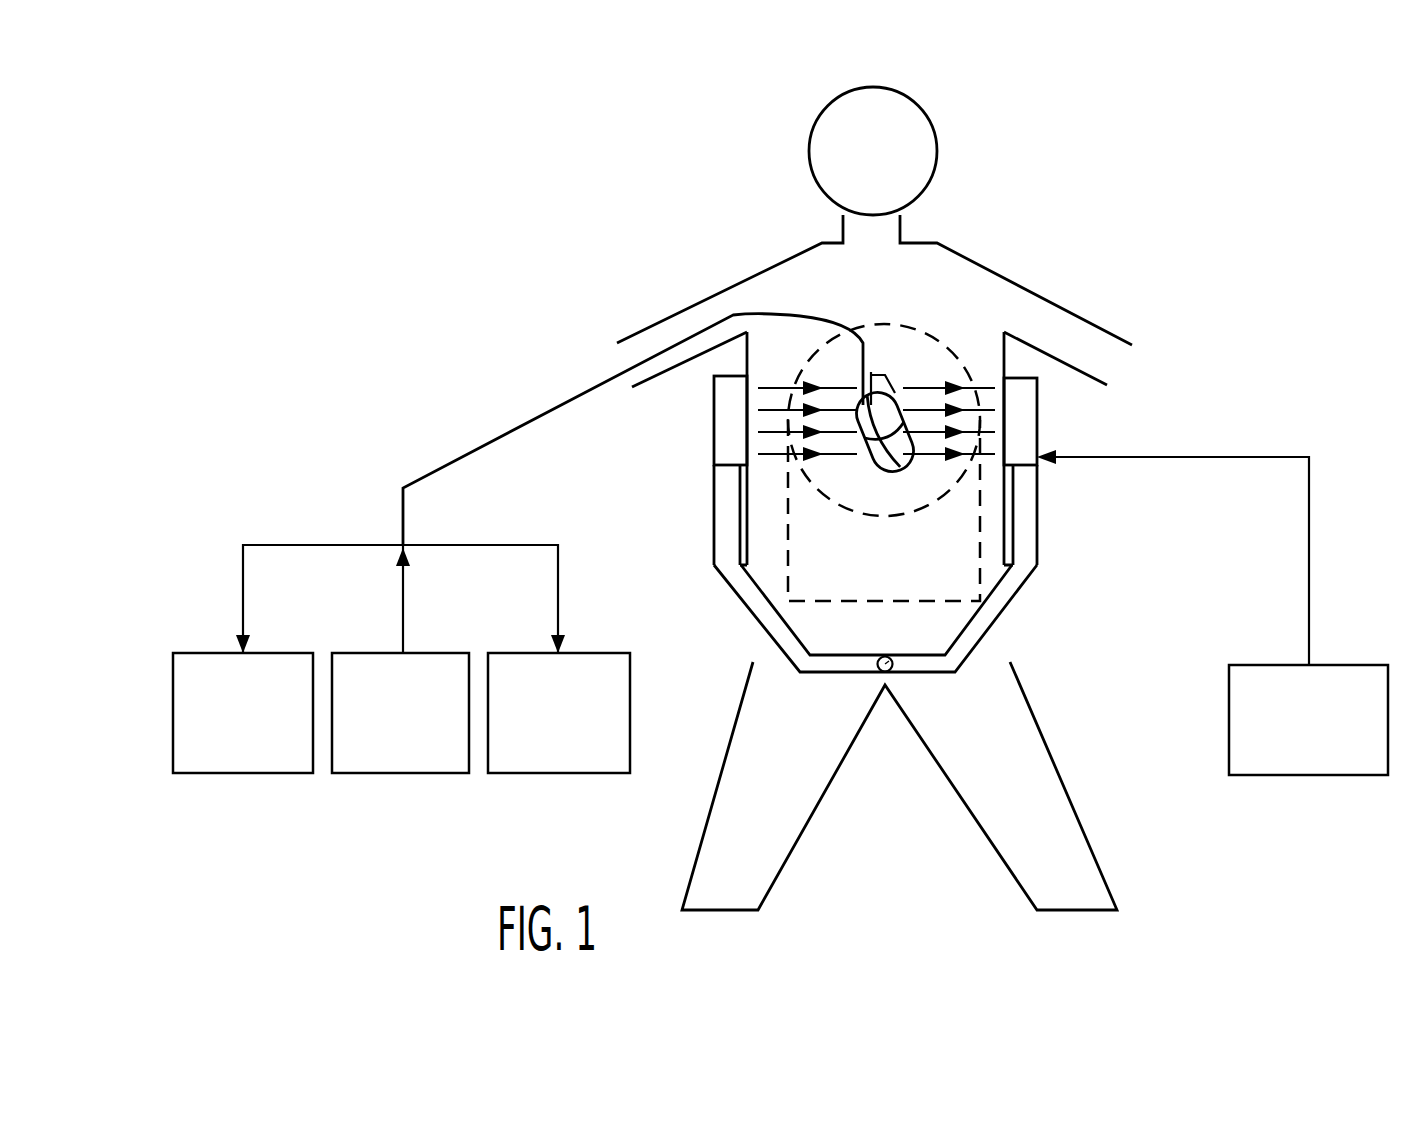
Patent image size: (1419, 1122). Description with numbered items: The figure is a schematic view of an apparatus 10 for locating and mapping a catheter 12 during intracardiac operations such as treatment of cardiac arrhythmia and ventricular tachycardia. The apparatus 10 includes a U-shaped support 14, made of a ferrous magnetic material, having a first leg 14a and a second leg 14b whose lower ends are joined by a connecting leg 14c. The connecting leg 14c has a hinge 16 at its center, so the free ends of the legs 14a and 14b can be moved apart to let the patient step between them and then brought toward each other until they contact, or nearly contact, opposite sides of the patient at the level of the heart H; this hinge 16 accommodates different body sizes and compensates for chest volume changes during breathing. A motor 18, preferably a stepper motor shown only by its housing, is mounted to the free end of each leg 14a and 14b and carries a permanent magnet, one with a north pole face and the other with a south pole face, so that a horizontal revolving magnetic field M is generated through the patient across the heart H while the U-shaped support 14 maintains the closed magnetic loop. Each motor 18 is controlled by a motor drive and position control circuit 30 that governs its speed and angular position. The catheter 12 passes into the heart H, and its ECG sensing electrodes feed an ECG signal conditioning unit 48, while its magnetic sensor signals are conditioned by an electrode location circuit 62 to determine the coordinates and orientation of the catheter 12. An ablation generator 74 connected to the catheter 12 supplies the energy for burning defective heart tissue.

The apparatus 10 is at (1169, 302).
The catheter 12 is at (512, 428).
The U-shaped support 14 is at (876, 532).
The first leg 14a is at (714, 514).
The second leg 14b is at (1037, 524).
The connecting leg 14c is at (825, 665).
The hinge 16 is at (885, 657).
The motor 18 is at (714, 430).
The motor drive and position control circuit 30 is at (1311, 777).
The ECG signal conditioning unit 48 is at (540, 775).
The electrode location circuit 62 is at (265, 775).
The ablation generator 74 is at (423, 775).
The heart H is at (893, 398).
The revolving magnetic field M is at (978, 390).